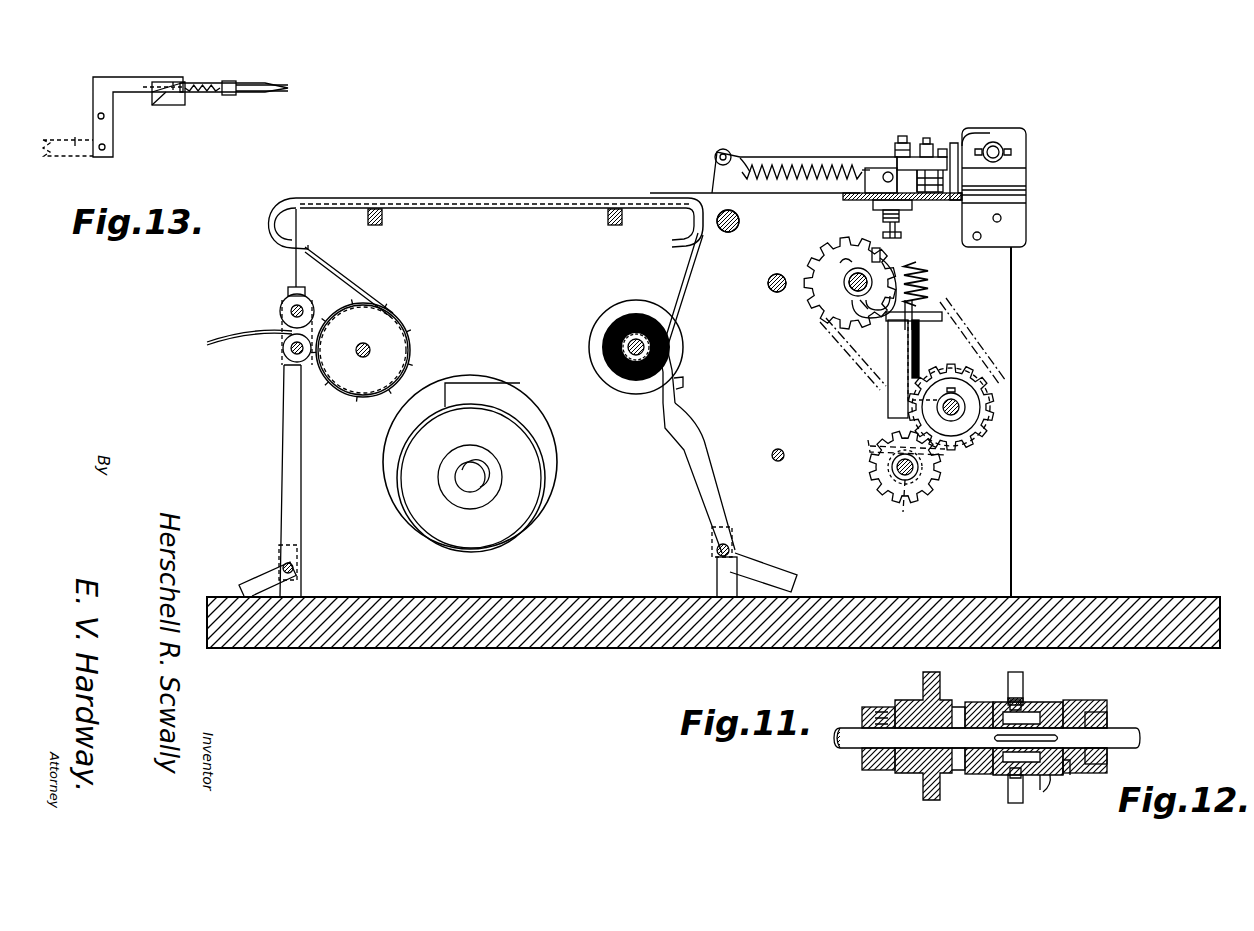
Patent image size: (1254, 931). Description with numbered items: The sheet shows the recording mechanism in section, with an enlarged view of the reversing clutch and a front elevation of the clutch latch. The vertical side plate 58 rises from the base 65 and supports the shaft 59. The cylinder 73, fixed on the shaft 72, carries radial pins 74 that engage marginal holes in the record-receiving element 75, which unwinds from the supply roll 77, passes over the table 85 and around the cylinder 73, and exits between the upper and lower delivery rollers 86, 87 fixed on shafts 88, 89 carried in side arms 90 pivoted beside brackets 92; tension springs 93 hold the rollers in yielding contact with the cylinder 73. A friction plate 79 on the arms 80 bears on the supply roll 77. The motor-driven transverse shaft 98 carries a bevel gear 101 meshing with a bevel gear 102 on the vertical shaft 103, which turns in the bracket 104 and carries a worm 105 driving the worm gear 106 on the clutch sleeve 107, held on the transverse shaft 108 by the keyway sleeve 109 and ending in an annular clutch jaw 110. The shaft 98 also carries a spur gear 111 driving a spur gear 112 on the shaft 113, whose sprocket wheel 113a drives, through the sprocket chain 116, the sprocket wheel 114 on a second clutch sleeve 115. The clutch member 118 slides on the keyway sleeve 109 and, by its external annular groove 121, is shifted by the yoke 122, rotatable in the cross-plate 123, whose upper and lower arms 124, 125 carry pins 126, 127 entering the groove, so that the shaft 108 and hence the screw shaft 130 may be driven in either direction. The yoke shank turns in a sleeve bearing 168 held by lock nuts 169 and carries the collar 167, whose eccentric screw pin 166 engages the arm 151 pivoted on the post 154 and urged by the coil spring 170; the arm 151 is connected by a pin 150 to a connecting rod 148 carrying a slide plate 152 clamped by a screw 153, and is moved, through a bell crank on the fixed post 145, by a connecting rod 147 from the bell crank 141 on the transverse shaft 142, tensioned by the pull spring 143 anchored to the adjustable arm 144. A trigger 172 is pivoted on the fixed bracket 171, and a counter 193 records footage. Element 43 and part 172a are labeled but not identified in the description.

In FIG. 11, the drive wheel 43 is at (512, 530).
In FIG. 11, the vertical side plate 58 is at (1000, 326).
In FIG. 11, the shaft 59 is at (783, 462).
In FIG. 11, the base 65 is at (1050, 597).
In FIG. 11, the shaft 72 is at (361, 357).
In FIG. 11, the cylinder 73 is at (410, 328).
In FIG. 11, the radial outwardly extended pins 74 is at (411, 366).
In FIG. 11, the record-receiving element 75 is at (352, 292).
In FIG. 11, the supply roll 77 is at (628, 322).
In FIG. 11, the transverse friction plate 79 is at (672, 400).
In FIG. 11, the arms 80 is at (698, 447).
In FIG. 11, the table 85 is at (540, 206).
In FIG. 11, the front upper delivery roller 86 is at (281, 313).
In FIG. 11, the lower delivery roller 87 is at (283, 352).
In FIG. 11, the upper shaft 88 is at (292, 308).
In FIG. 11, the lower shaft 89 is at (294, 353).
In FIG. 11, the upstanding side arms 90 is at (284, 462).
In FIG. 11, the brackets 92 is at (279, 578).
In FIG. 11, the tension springs 93 is at (262, 560).
In FIG. 11, the transverse shaft 98 is at (896, 474).
In FIG. 11, the bevel gear 101 is at (902, 516).
In FIG. 11, the bevel gear 102 is at (868, 440).
In FIG. 11, the vertical shaft 103 is at (910, 360).
In FIG. 11, the bracket 104 is at (888, 406).
In FIG. 11, the worm 105 is at (932, 284).
In FIG. 11, the worm gear 106 is at (848, 244).
In FIG. 12, the clutch sleeve 107 is at (1100, 702).
In FIG. 11, the transverse shaft 108 is at (918, 268).
In FIG. 12, the transverse shaft 108 is at (1122, 732).
In FIG. 12, the keyway sleeve 109 is at (1060, 776).
In FIG. 12, the annular clutch jaw 110 is at (1100, 762).
In FIG. 11, the spur gear 111 is at (942, 486).
In FIG. 11, the spur gear 112 is at (975, 428).
In FIG. 11, the transverse shaft 113 is at (964, 408).
In FIG. 11, the sprocket wheel 113a is at (988, 385).
In FIG. 11, the sprocket wheel 114 is at (810, 258).
In FIG. 12, the sprocket wheel 114 is at (920, 676).
In FIG. 12, the clutch sleeve 115 is at (902, 780).
In FIG. 11, the sprocket chain 116 is at (958, 318).
In FIG. 12, the clutch member 118 is at (1044, 790).
In FIG. 11, the external annular groove 121 is at (880, 275).
In FIG. 12, the external annular groove 121 is at (1028, 704).
In FIG. 11, the yoke 122 is at (903, 234).
In FIG. 11, the cross-plate 123 is at (845, 198).
In FIG. 11, the upper arm 124 is at (874, 248).
In FIG. 12, the upper arm 124 is at (1020, 672).
In FIG. 11, the lower arm 125 is at (875, 308).
In FIG. 12, the lower arm 125 is at (1015, 803).
In FIG. 11, the pin 126 is at (850, 274).
In FIG. 12, the pin 126 is at (1012, 698).
In FIG. 11, the pin 127 is at (850, 293).
In FIG. 12, the pin 127 is at (985, 702).
In FIG. 11, the screw shaft 130 is at (767, 284).
In FIG. 11, the bell crank 141 is at (714, 176).
In FIG. 11, the transverse shaft 142 is at (726, 233).
In FIG. 11, the pull spring 143 is at (772, 165).
In FIG. 11, the adjustable arm 144 is at (866, 168).
In FIG. 11, the fixed post 145 is at (904, 136).
In FIG. 11, the connecting rod 147 is at (748, 152).
In FIG. 11, the connecting rod 148 is at (951, 145).
In FIG. 13, the connecting rod 148 is at (271, 105).
In FIG. 13, the pin 150 is at (174, 80).
In FIG. 11, the arm 151 is at (922, 155).
In FIG. 13, the arm 151 is at (162, 105).
In FIG. 13, the slide plate 152 is at (246, 83).
In FIG. 13, the clamp screw 153 is at (226, 80).
In FIG. 11, the post 154 is at (932, 142).
In FIG. 11, the screw pin 166 is at (897, 157).
In FIG. 11, the collar 167 is at (882, 168).
In FIG. 11, the sleeve bearing 168 is at (900, 219).
In FIG. 11, the lock nuts 169 is at (878, 191).
In FIG. 11, the coil spring 170 is at (966, 170).
In FIG. 11, the fixed bracket 171 is at (1025, 202).
In FIG. 11, the trigger 172 is at (985, 128).
In FIG. 13, the trigger 172 is at (93, 92).
In FIG. 13, the bracket arm hole 172a is at (93, 118).
In FIG. 11, the counter 193 is at (1030, 150).